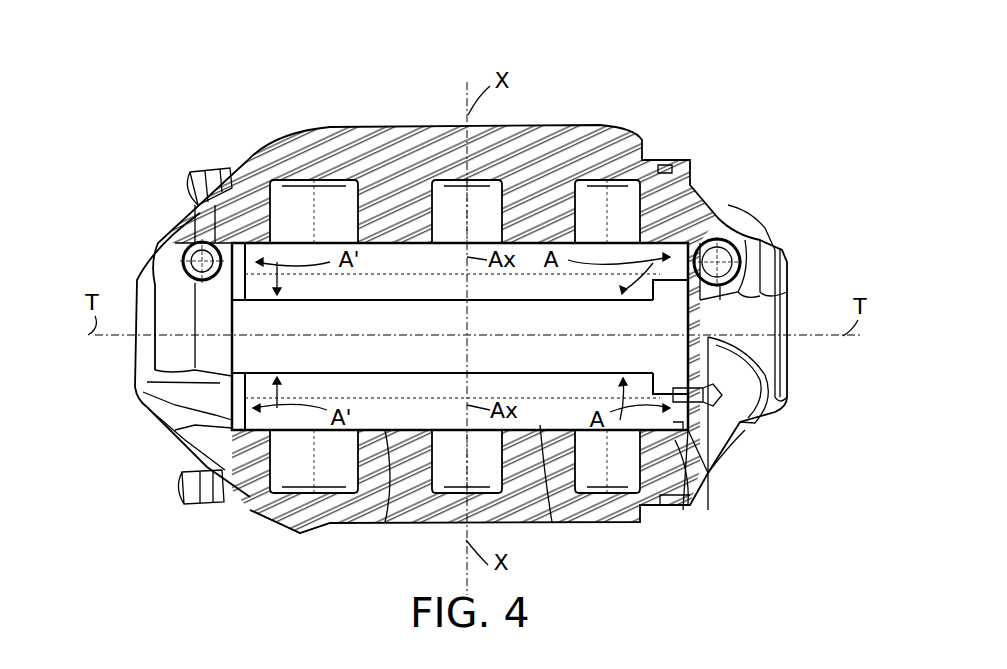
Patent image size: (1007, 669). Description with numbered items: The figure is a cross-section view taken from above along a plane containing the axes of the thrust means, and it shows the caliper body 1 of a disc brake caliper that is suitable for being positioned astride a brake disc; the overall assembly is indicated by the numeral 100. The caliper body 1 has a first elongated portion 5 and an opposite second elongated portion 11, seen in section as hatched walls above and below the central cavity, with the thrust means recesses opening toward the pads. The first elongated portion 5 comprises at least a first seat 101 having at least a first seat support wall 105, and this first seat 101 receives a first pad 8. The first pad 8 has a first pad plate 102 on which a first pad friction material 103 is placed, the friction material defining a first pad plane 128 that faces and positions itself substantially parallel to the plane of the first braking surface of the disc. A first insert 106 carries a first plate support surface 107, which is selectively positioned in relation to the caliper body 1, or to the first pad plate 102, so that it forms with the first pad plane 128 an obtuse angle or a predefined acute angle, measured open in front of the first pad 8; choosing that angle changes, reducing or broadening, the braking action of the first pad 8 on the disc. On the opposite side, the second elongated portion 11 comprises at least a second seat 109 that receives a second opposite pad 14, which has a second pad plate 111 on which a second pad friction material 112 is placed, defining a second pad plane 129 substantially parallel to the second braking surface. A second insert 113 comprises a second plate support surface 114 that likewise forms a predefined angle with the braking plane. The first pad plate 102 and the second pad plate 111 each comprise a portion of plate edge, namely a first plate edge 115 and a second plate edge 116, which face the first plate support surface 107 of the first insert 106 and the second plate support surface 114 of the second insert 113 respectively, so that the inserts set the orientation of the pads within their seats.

The caliper body 1 is at (540, 150).
The first elongated portion 5 is at (328, 130).
The first pad 8 is at (623, 130).
The second elongated portion 11 is at (300, 533).
The second opposite pad 14 is at (552, 410).
The brake caliper 100 is at (662, 122).
The first seat 101 is at (395, 145).
The first pad plate 102 is at (668, 195).
The first pad friction material 103 is at (163, 277).
The first seat support wall 105 is at (730, 240).
The first insert 106 is at (712, 222).
The first plate support surface 107 is at (777, 292).
The second seat 109 is at (383, 420).
The second pad plate 111 is at (668, 415).
The second pad friction material 112 is at (212, 405).
The second insert 113 is at (730, 378).
The second plate support surface 114 is at (722, 418).
The first plate edge 115 is at (760, 270).
The second plate edge 116 is at (700, 445).
The first pad plane 128 is at (548, 370).
The second pad plane 129 is at (505, 303).